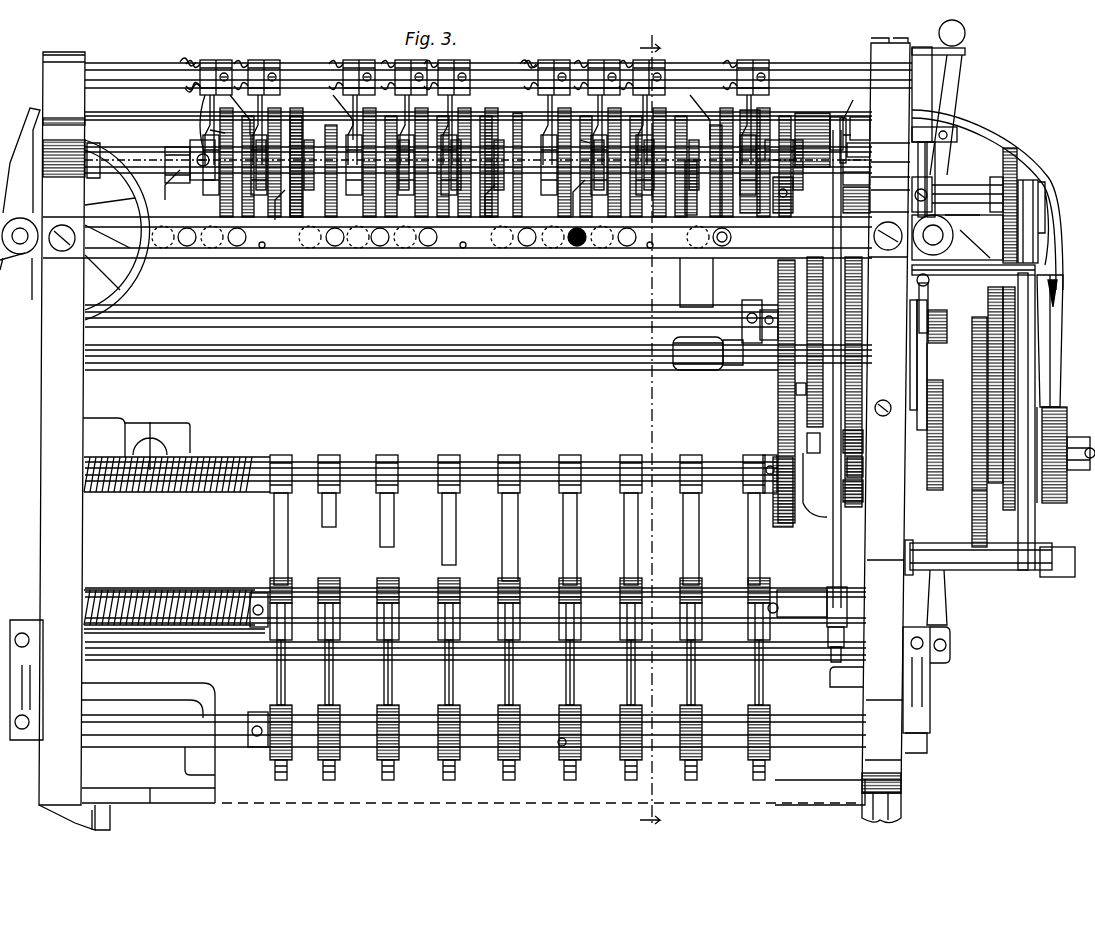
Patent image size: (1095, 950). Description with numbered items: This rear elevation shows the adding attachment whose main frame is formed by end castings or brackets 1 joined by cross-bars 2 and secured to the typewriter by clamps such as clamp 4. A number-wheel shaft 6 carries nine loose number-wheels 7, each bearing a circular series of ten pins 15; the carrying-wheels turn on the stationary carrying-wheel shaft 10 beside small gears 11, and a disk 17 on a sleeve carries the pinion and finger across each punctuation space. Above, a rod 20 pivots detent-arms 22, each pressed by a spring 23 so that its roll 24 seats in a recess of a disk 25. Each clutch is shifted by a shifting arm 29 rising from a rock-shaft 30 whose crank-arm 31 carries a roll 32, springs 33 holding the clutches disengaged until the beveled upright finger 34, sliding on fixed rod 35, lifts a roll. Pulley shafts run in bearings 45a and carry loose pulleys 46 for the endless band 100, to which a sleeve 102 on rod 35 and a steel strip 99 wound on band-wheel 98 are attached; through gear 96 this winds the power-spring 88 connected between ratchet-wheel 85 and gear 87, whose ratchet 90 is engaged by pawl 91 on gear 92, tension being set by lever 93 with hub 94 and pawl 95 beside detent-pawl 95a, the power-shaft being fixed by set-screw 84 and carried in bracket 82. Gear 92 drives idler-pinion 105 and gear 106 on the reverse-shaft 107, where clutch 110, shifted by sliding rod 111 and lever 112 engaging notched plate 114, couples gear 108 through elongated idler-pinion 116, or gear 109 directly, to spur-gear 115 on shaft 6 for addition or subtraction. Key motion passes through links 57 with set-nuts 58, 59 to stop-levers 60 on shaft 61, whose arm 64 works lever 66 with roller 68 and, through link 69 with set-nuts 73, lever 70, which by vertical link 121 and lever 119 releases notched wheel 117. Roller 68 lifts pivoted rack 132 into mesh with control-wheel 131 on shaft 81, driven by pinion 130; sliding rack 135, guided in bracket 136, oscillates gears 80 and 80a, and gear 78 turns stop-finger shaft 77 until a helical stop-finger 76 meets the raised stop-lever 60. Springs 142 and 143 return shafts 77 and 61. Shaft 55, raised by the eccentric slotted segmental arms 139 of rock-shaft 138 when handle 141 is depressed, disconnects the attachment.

The frame bracket 1 is at (455, 433).
The cross-bar 2 is at (523, 255).
The clamp 4 is at (159, 455).
The number-wheel shaft 6 is at (140, 160).
The number-wheel 7 is at (740, 220).
The carrying-wheel shaft 10 is at (810, 115).
The small gear 11 is at (707, 203).
The pin 15 is at (690, 123).
The disk 17 is at (715, 138).
The rod 20 is at (835, 58).
The detent-arm 22 is at (207, 110).
The spring 23 is at (545, 115).
The roll 24 is at (585, 122).
The disk 25 is at (225, 233).
The shifting arm 29 is at (483, 242).
The shaft 30 is at (627, 245).
The crank-arm 31 is at (722, 245).
The roll 32 is at (690, 237).
The spring 33 is at (577, 246).
The upright finger 34 is at (696, 282).
The fixed rod 35 is at (643, 367).
The bearing 45a is at (957, 235).
The pulley 46 is at (145, 280).
The shaft 55 is at (932, 728).
The link 57 is at (440, 678).
The set-nut 58 is at (500, 705).
The set-nut 59 is at (550, 740).
The stop-lever 60 is at (385, 590).
The shaft 61 is at (797, 610).
The arm 64 is at (843, 590).
The lever 66 is at (863, 467).
The roller 68 is at (863, 492).
The link 69 is at (833, 548).
The lever 70 is at (860, 180).
The set-nut 73 is at (825, 628).
The stop-finger 76 is at (272, 530).
The stop-finger shaft 77 is at (542, 465).
The gear 78 is at (780, 520).
The large gear 80 is at (778, 380).
The gear-wheel 80a is at (793, 398).
The shaft 81 is at (409, 315).
The bracket 82 is at (1037, 352).
The set-screw 84 is at (887, 418).
The ratchet-wheel 85 is at (928, 488).
The gear 87 is at (972, 505).
The power-spring 88 is at (957, 450).
The ratchet 90 is at (995, 485).
The pawl 91 is at (1054, 293).
The gear 92 is at (1015, 505).
The lever 93 is at (915, 353).
The hub 94 is at (920, 393).
The pawl 95 is at (945, 370).
The detent-pawl 95a is at (975, 315).
The gear 96 is at (975, 530).
The band-wheel 98 is at (1066, 455).
The steel strip 99 is at (1056, 365).
The endless steel band 100 is at (410, 380).
The sleeve 102 is at (730, 365).
The idler-pinion 105 is at (1005, 260).
The gear 106 is at (1018, 157).
The reverse-shaft 107 is at (975, 190).
The gear 108 is at (795, 216).
The gear 109 is at (875, 236).
The toothed clutch 110 is at (830, 215).
The sliding rod 111 is at (960, 125).
The lever 112 is at (950, 75).
The fixed plate 114 is at (930, 50).
The spur-gear 115 is at (854, 113).
The elongated idler-pinion 116 is at (845, 108).
The notched wheel 117 is at (860, 197).
The lever 119 is at (860, 140).
The vertical link 121 is at (865, 115).
The pinion 130 is at (853, 210).
The control-wheel 131 is at (860, 315).
The rack 132 is at (862, 448).
The sliding rack 135 is at (803, 438).
The bracket 136 is at (820, 510).
The rock-shaft 138 is at (948, 645).
The segmental arm 139 is at (930, 695).
The handle 141 is at (942, 611).
The spring 142 is at (215, 462).
The spring 143 is at (155, 600).